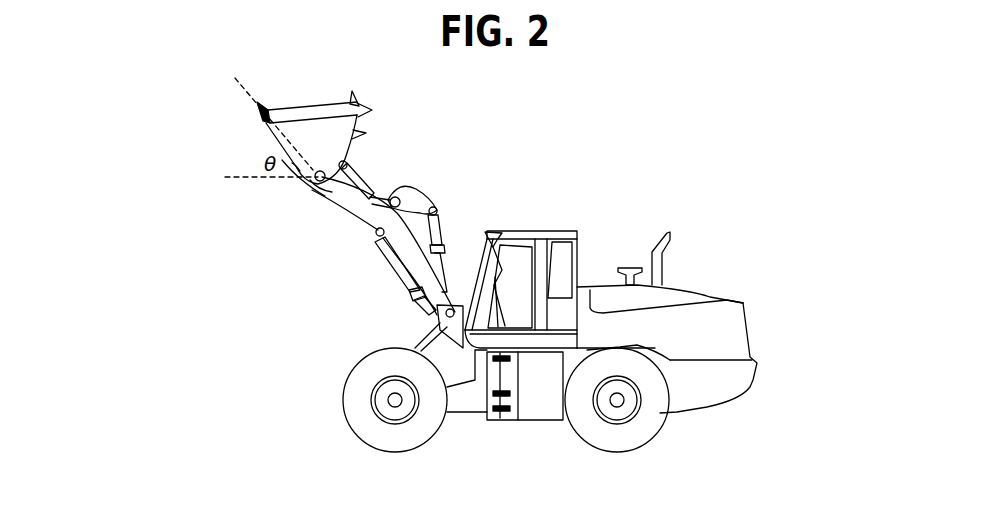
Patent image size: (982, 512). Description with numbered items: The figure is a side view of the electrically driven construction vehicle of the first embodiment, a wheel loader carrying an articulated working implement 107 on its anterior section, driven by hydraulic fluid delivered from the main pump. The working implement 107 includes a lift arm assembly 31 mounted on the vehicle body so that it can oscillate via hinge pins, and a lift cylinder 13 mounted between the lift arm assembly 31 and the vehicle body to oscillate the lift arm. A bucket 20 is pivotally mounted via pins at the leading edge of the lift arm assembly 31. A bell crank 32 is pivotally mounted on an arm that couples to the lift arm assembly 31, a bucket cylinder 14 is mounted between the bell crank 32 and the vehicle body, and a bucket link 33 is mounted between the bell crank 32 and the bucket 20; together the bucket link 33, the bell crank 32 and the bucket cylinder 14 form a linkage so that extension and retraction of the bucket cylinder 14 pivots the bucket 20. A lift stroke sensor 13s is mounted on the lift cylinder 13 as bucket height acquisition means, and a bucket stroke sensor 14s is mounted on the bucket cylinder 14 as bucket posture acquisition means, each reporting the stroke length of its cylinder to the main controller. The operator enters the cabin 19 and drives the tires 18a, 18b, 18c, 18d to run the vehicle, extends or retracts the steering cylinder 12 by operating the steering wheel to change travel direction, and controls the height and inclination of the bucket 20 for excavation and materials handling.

The working implement 107 is at (337, 255).
The bucket 20 is at (303, 112).
The lift arm assembly 31 is at (328, 202).
The bucket link 33 is at (350, 168).
The bell crank 32 is at (417, 193).
The bucket cylinder 14 is at (440, 217).
The bucket stroke sensor 14s is at (440, 242).
The lift cylinder 13 is at (390, 262).
The lift stroke sensor 13s is at (407, 295).
The cabin 19 is at (533, 233).
The steering cylinder 12 is at (497, 400).
The tire 18a is at (346, 416).
The tire 18b is at (350, 427).
The tire 18c is at (659, 411).
The tire 18d is at (667, 413).